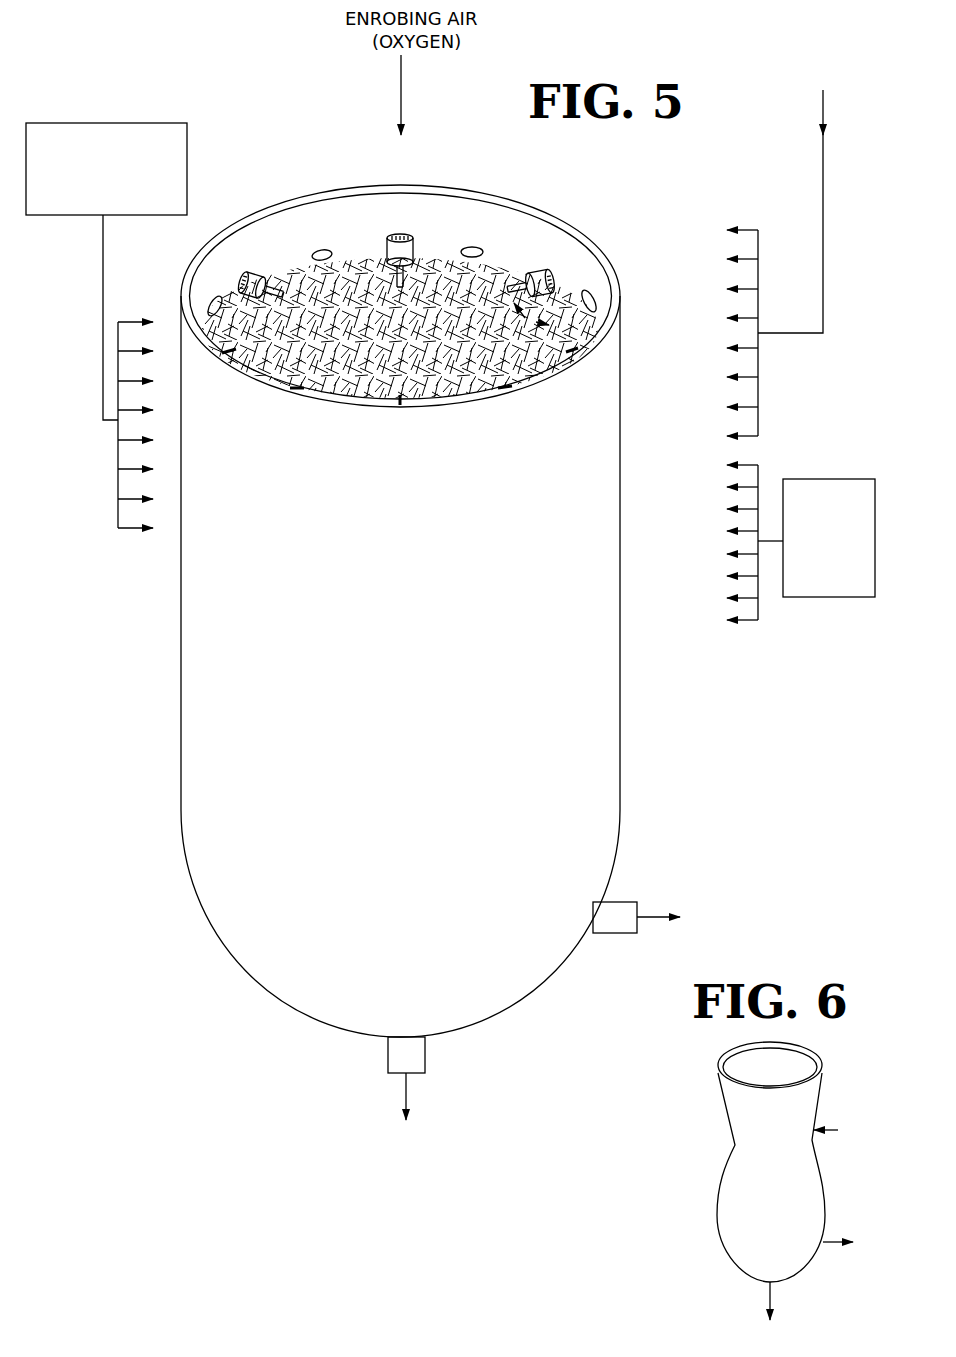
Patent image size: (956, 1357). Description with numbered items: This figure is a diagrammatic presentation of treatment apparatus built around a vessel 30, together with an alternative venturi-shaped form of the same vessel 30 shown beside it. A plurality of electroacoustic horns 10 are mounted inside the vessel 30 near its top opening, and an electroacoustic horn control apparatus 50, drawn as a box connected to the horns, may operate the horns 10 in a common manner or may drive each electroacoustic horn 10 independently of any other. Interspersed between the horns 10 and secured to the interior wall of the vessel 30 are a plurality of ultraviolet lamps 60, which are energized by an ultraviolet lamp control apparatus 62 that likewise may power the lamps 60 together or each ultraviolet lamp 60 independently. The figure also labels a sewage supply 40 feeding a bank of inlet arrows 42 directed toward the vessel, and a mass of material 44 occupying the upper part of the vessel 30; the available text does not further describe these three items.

In FIG. 5, the electroacoustic horn 10 is at (393, 240).
In FIG. 5, the vessel 30 is at (181, 628).
In FIG. 6, the vessel 30 is at (779, 1181).
In FIG. 5, the sewage inlet line 40 is at (826, 300).
In FIG. 5, the inlet nozzles 42 is at (758, 231).
In FIG. 5, the solid particulate matter 44 is at (412, 339).
In FIG. 5, the electroacoustic horn control apparatus 50 is at (80, 300).
In FIG. 5, the ultraviolet lamps 60 is at (480, 250).
In FIG. 5, the ultraviolet lamp control apparatus 62 is at (806, 600).